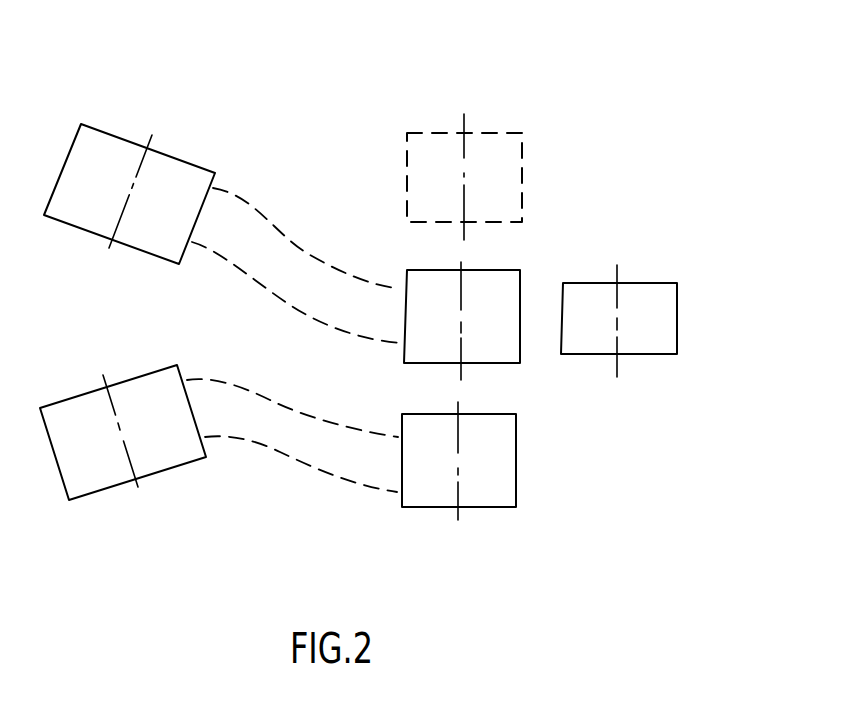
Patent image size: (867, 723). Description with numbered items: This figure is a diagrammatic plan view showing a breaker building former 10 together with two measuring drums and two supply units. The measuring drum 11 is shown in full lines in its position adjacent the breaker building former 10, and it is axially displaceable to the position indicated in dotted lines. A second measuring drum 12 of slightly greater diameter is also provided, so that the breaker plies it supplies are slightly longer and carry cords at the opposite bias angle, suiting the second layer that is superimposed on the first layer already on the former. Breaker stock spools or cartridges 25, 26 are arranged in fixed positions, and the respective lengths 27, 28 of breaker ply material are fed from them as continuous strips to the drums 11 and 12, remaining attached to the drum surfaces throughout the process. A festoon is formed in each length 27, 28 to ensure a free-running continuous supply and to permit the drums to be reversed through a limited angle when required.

The breaker building former 10 is at (623, 347).
The measuring drum 11 is at (478, 125).
The second measuring drum 12 is at (487, 497).
The breaker stock spool 25 is at (174, 234).
The breaker stock spool 26 is at (190, 448).
The length of breaker ply material 27 is at (305, 265).
The length of breaker ply material 28 is at (297, 425).